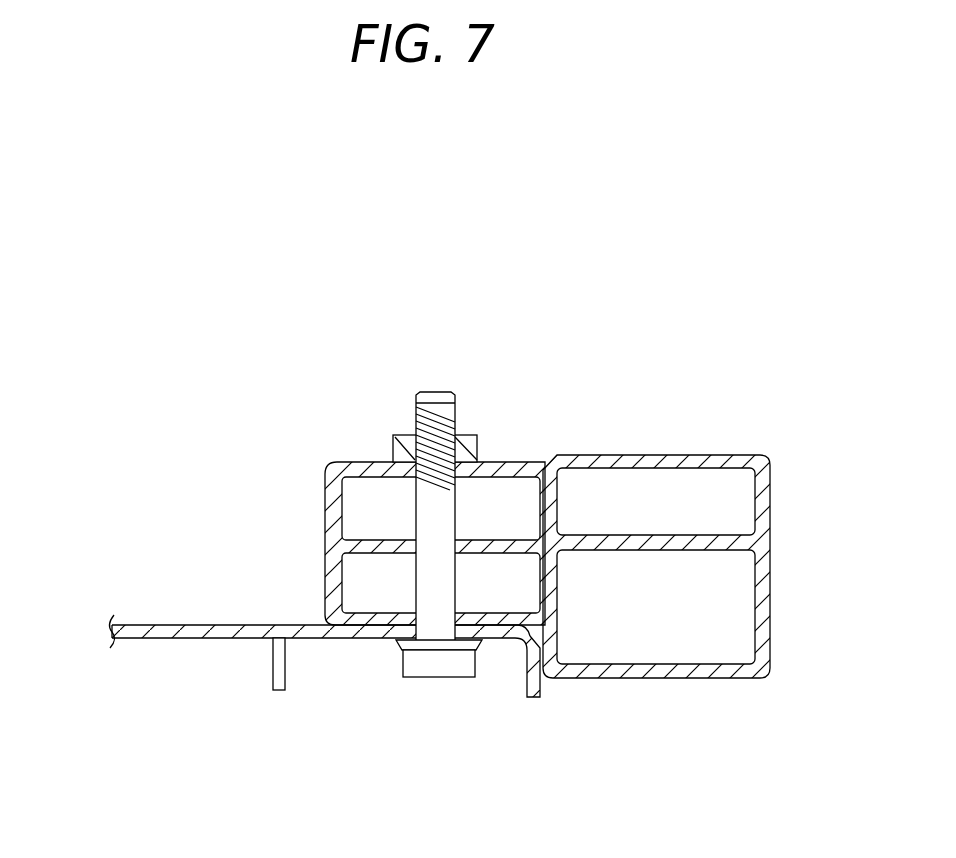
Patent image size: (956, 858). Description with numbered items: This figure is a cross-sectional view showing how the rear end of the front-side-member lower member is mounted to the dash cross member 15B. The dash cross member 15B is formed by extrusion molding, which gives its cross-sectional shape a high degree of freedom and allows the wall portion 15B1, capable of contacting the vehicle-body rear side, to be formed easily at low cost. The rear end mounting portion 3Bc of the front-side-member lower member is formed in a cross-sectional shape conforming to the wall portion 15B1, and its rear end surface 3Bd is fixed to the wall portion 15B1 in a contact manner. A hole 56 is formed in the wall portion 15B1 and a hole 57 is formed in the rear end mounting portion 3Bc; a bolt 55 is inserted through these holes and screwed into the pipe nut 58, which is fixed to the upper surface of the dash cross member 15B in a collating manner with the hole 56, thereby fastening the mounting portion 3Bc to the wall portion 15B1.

The dash cross member 15B is at (695, 457).
The wall portion 15B1 is at (520, 627).
The hole 56 is at (413, 620).
The pipe nut 58 is at (397, 450).
The hole 57 is at (395, 642).
The bolt 55 is at (429, 662).
The rear end mounting portion 3Bc is at (248, 640).
The rear end surface 3Bd is at (525, 658).